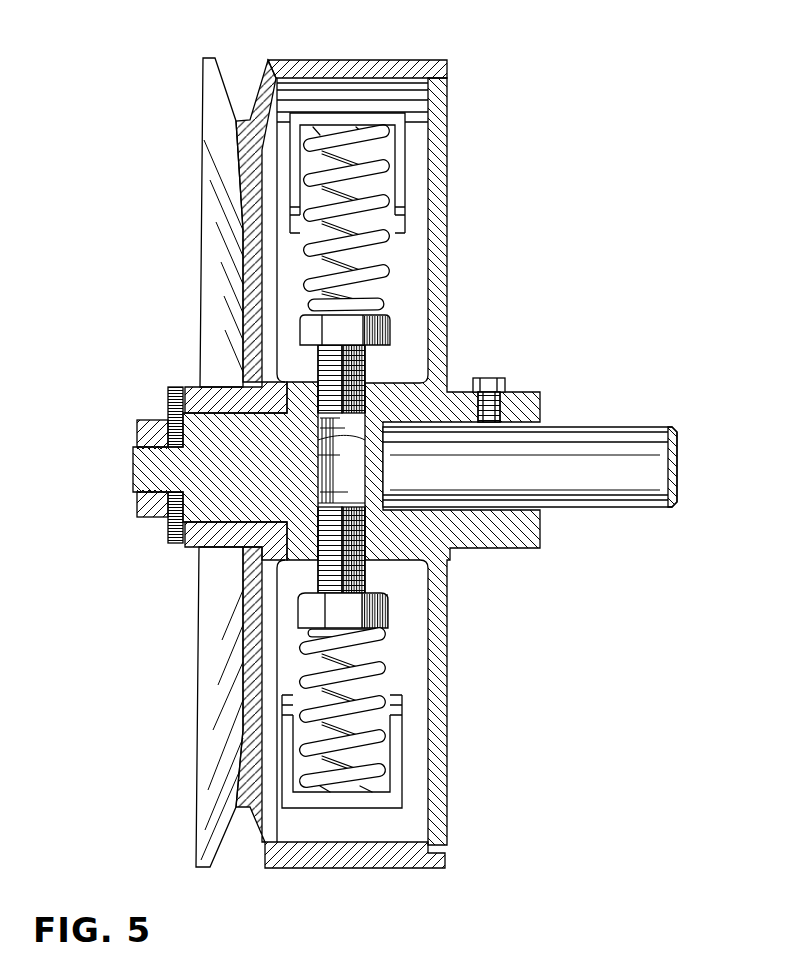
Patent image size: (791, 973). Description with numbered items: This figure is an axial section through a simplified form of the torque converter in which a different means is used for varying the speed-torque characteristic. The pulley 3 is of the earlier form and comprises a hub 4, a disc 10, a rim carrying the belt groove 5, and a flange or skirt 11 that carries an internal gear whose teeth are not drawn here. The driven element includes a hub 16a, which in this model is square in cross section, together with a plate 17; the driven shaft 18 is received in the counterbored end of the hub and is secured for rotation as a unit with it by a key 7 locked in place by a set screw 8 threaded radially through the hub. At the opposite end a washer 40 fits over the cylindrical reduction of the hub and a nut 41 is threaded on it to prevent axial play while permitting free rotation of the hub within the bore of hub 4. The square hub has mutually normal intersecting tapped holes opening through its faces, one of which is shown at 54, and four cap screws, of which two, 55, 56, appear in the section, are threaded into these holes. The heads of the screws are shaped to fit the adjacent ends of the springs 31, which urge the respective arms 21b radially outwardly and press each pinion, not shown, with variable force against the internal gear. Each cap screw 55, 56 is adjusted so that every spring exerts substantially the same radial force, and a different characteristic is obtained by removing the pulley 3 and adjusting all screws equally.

The pulley 3 is at (380, 489).
The hub 4 is at (232, 393).
The rim and belt groove 5 is at (262, 92).
The key 7 is at (540, 425).
The set screw 8 is at (495, 378).
The disc 10 is at (248, 607).
The flange or skirt 11 is at (380, 858).
The hub 16a is at (423, 398).
The plate 17 is at (441, 703).
The driven shaft 18 is at (619, 492).
The arm 21b is at (327, 114).
The spring 31 is at (377, 268).
The washer 40 is at (172, 547).
The nut 41 is at (137, 513).
The tapped hole 54 is at (336, 468).
The cap screw 55 is at (364, 364).
The cap screw 56 is at (318, 572).